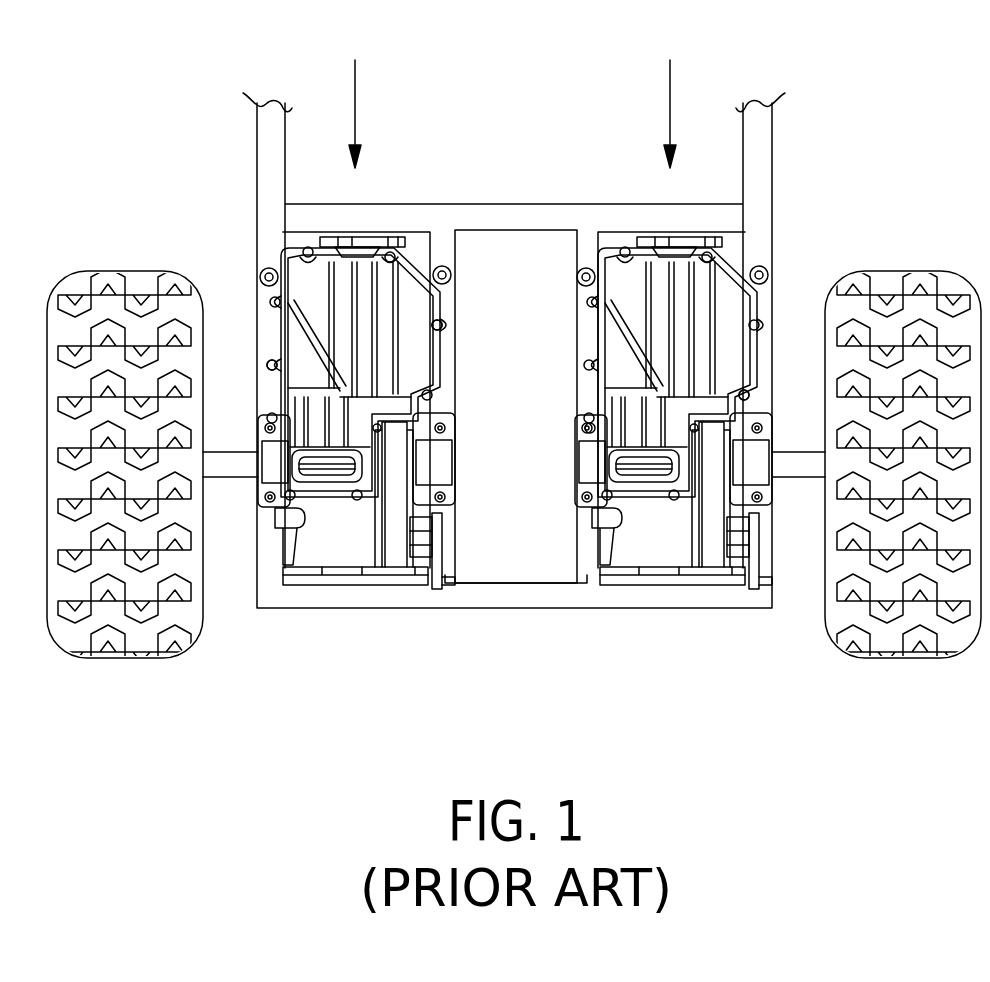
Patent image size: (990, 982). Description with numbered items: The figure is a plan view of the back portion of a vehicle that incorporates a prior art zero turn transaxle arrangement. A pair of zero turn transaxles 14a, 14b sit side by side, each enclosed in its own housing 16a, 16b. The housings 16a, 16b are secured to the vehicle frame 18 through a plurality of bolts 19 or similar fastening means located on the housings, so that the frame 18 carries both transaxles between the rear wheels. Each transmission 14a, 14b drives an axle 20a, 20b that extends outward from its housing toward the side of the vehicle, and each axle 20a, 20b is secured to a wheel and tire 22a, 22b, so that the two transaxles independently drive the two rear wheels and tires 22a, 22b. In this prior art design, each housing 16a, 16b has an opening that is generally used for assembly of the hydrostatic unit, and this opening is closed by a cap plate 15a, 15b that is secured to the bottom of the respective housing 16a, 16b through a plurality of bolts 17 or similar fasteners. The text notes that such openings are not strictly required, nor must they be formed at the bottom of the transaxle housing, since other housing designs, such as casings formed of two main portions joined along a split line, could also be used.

The zero turn transaxle 14a is at (355, 93).
The zero turn transaxle 14b is at (670, 93).
The cap plate 15a is at (310, 285).
The cap plate 15b is at (772, 290).
The housing 16a is at (322, 535).
The housing 16b is at (670, 535).
The bolts 17 is at (268, 362).
The vehicle frame 18 is at (475, 215).
The bolts 19 is at (577, 277).
The axle 20a is at (232, 467).
The axle 20b is at (796, 467).
The wheel and tire 22a is at (190, 648).
The wheel and tire 22b is at (838, 648).